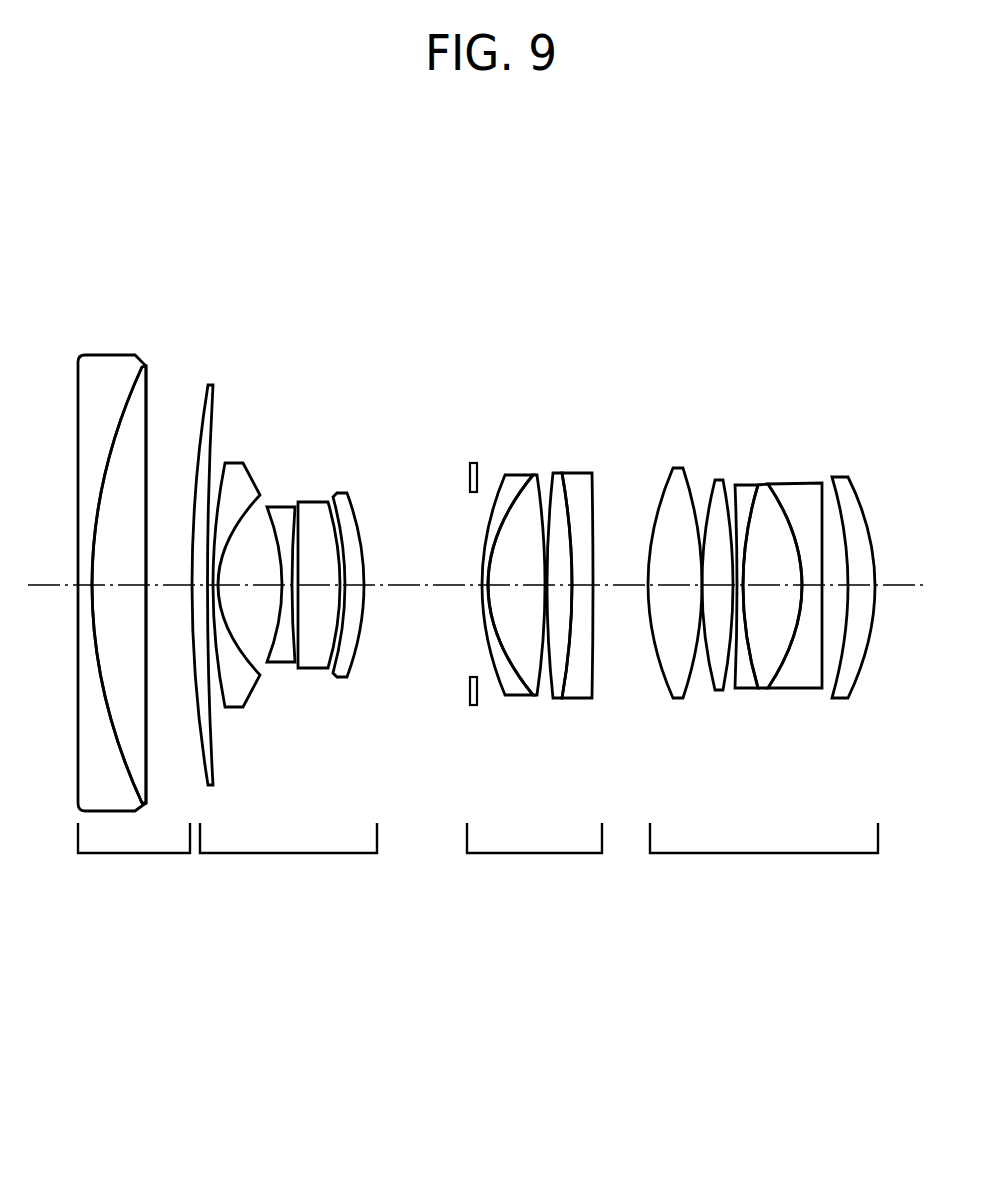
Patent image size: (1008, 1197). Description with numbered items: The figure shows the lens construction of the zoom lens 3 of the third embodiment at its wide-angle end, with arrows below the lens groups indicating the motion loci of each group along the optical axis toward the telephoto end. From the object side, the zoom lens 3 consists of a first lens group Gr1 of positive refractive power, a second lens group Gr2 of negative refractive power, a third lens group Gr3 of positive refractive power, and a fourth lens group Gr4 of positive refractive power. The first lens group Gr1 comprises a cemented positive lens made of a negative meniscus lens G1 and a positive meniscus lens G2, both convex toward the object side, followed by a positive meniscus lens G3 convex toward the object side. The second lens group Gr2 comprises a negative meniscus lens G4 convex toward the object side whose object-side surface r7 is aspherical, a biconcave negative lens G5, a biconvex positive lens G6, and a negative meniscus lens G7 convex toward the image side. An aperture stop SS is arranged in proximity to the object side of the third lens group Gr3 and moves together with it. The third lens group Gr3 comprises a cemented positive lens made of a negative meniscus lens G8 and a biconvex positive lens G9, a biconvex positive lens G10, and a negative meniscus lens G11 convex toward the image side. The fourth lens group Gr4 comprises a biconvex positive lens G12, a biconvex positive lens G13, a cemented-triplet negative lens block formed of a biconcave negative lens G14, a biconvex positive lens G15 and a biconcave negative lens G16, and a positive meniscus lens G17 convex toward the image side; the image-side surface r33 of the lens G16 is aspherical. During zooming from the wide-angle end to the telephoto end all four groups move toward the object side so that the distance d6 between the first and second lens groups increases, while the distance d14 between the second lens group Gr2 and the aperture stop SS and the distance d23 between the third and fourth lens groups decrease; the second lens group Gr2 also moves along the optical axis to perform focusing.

The zoom lens 3 is at (443, 267).
The negative meniscus lens G1 is at (103, 370).
The positive meniscus lens G2 is at (145, 367).
The positive meniscus lens G3 is at (207, 387).
The negative meniscus lens G4 is at (235, 463).
The biconcave negative lens G5 is at (283, 507).
The biconvex positive lens G6 is at (313, 502).
The negative meniscus lens G7 is at (348, 493).
The negative meniscus lens G8 is at (513, 477).
The biconvex positive lens G9 is at (538, 477).
The biconvex positive lens G10 is at (562, 482).
The negative meniscus lens G11 is at (583, 475).
The biconvex positive lens G12 is at (677, 470).
The biconvex positive lens G13 is at (722, 482).
The biconcave negative lens G14 is at (753, 485).
The biconvex positive lens G15 is at (775, 485).
The biconcave negative lens G16 is at (803, 490).
The positive meniscus lens G17 is at (848, 482).
The aperture stop SS is at (467, 480).
The distance between the first lens group and the second lens group d6 is at (198, 585).
The distance between the second lens group and the aperture stop d14 is at (410, 585).
The distance between the third lens group and the fourth lens group d23 is at (625, 585).
The object-side surface of the negative meniscus lens G4 r7 is at (210, 655).
The image-side surface of the cemented-triplet negative lens r33 is at (815, 612).
The first lens group Gr1 is at (38, 997).
The second lens group Gr2 is at (268, 997).
The third lens group Gr3 is at (483, 998).
The fourth lens group Gr4 is at (697, 998).